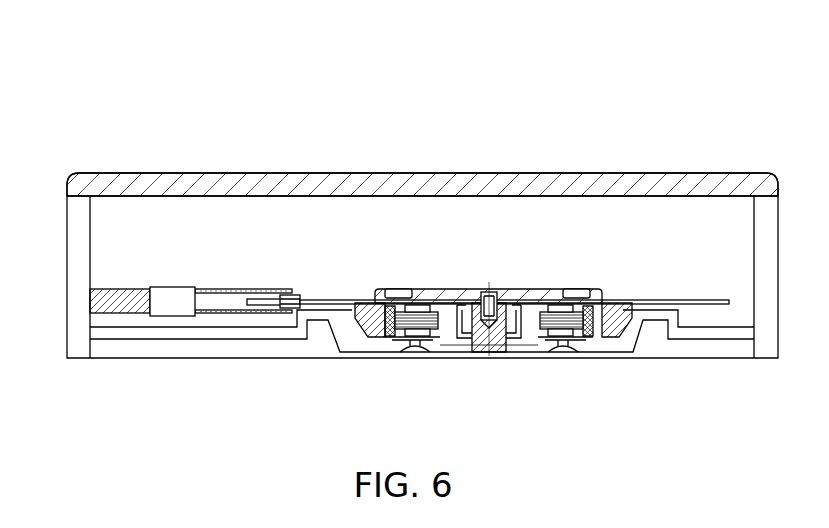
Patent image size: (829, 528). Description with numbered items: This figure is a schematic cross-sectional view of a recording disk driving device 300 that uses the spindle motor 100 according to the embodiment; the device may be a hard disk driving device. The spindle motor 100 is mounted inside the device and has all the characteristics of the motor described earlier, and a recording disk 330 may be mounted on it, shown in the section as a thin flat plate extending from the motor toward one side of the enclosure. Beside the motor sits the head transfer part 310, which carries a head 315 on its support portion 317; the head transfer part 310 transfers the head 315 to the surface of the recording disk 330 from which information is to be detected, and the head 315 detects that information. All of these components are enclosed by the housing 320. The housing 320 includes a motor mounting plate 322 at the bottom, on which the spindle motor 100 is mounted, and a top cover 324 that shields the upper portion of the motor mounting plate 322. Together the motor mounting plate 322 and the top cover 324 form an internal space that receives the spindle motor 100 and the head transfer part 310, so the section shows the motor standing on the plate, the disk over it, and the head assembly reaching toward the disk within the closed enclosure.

The recording disk driving device 300 is at (405, 57).
The housing 320 is at (62, 250).
The top cover 324 is at (240, 186).
The motor mounting plate 322 is at (768, 342).
The head transfer part 310 is at (172, 320).
The support portion 317 is at (250, 314).
The head 315 is at (297, 312).
The recording disk 330 is at (680, 300).
The spindle motor 100 is at (500, 278).